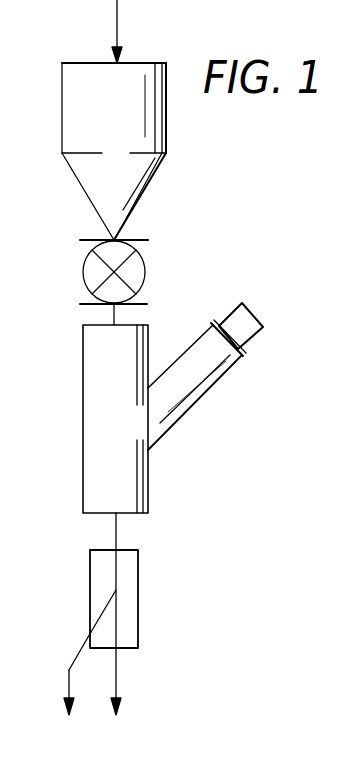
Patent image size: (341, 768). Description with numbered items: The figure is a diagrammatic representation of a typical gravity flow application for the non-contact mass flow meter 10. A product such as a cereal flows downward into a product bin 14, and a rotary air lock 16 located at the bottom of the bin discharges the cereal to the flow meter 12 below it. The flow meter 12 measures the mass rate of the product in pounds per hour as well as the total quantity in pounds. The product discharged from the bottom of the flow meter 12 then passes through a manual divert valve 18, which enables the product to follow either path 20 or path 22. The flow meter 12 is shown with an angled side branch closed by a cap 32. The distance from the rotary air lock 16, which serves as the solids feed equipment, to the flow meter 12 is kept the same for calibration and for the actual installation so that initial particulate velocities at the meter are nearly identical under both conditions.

The non-contact mass flow meter 10 is at (237, 167).
The flow meter 12 is at (95, 406).
The product bin 14 is at (122, 124).
The rotary air lock 16 is at (146, 283).
The manual divert valve 18 is at (128, 568).
The path 20 is at (118, 673).
The path 22 is at (67, 683).
The cap 32 is at (233, 320).